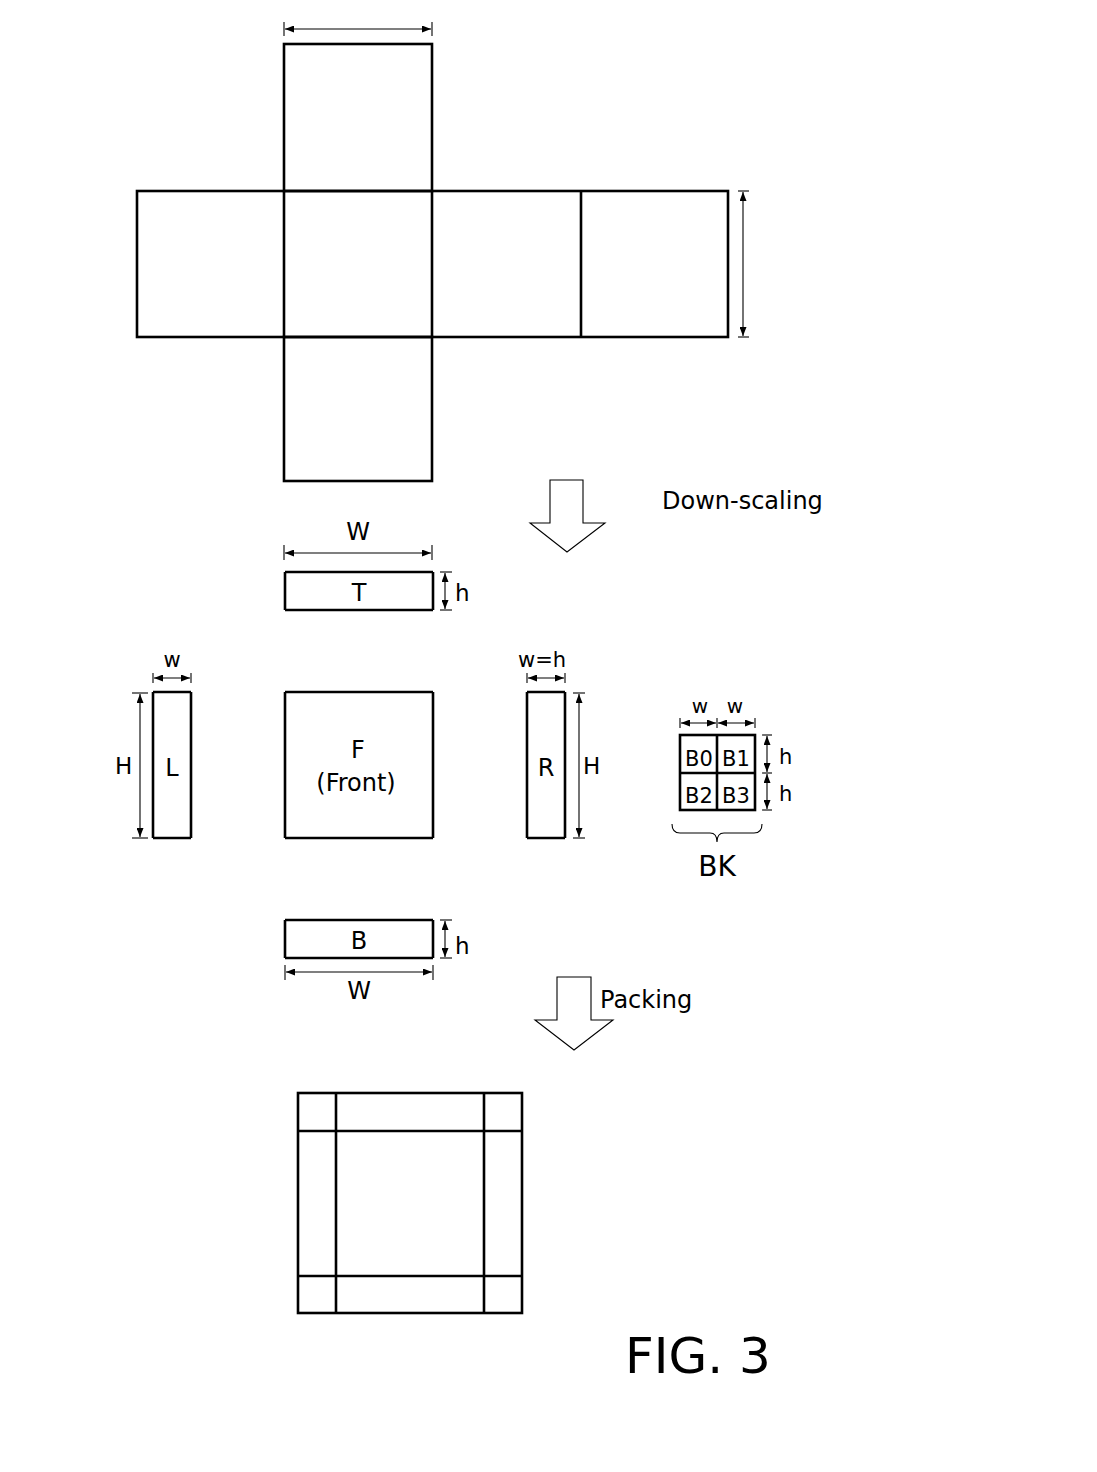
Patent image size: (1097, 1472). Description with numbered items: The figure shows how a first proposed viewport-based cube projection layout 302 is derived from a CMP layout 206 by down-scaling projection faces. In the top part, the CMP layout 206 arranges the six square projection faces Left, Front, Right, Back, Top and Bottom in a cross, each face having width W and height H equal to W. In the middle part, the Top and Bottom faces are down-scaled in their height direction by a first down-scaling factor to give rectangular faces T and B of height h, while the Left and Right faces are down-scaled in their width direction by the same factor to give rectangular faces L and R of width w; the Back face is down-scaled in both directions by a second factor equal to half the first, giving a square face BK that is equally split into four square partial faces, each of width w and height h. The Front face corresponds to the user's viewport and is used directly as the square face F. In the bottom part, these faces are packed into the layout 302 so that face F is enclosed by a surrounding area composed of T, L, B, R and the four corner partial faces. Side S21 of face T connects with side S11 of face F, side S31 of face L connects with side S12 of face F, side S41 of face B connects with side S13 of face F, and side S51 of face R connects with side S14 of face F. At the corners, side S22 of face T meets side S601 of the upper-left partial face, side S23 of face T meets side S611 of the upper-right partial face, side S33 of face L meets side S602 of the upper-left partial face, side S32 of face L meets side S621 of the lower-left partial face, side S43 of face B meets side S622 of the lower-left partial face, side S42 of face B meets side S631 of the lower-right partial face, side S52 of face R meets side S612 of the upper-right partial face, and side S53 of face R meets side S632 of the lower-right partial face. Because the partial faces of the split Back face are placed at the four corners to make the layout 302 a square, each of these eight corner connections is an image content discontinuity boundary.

The CMP layout 206 is at (683, 68).
The first proposed viewport-based cube projection layout 302 is at (387, 1192).
The side of rectangular projection face F S11 is at (383, 692).
The side of rectangular projection face F S12 is at (285, 807).
The side of rectangular projection face F S13 is at (387, 838).
The side of rectangular projection face F S14 is at (433, 737).
The side of rectangular projection face T S21 is at (327, 610).
The side of rectangular projection face T S22 is at (285, 590).
The side of rectangular projection face T S23 is at (433, 600).
The side of rectangular projection face L S31 is at (191, 733).
The side of rectangular projection face L S32 is at (172, 838).
The side of rectangular projection face L S33 is at (183, 692).
The side of rectangular projection face B S41 is at (328, 920).
The side of rectangular projection face B S42 is at (433, 932).
The side of rectangular projection face B S43 is at (285, 933).
The side of rectangular projection face R S51 is at (527, 805).
The side of rectangular projection face R S52 is at (527, 692).
The side of rectangular projection face R S53 is at (547, 838).
The side of partial rectangular projection face B0 S601 is at (338, 1112).
The side of partial rectangular projection face B0 S602 is at (313, 1131).
The side of partial rectangular projection face B1 S611 is at (483, 1112).
The side of partial rectangular projection face B1 S612 is at (507, 1131).
The side of partial rectangular projection face B2 S621 is at (313, 1276).
The side of partial rectangular projection face B2 S622 is at (337, 1292).
The side of partial rectangular projection face B3 S631 is at (483, 1292).
The side of partial rectangular projection face B3 S632 is at (507, 1276).